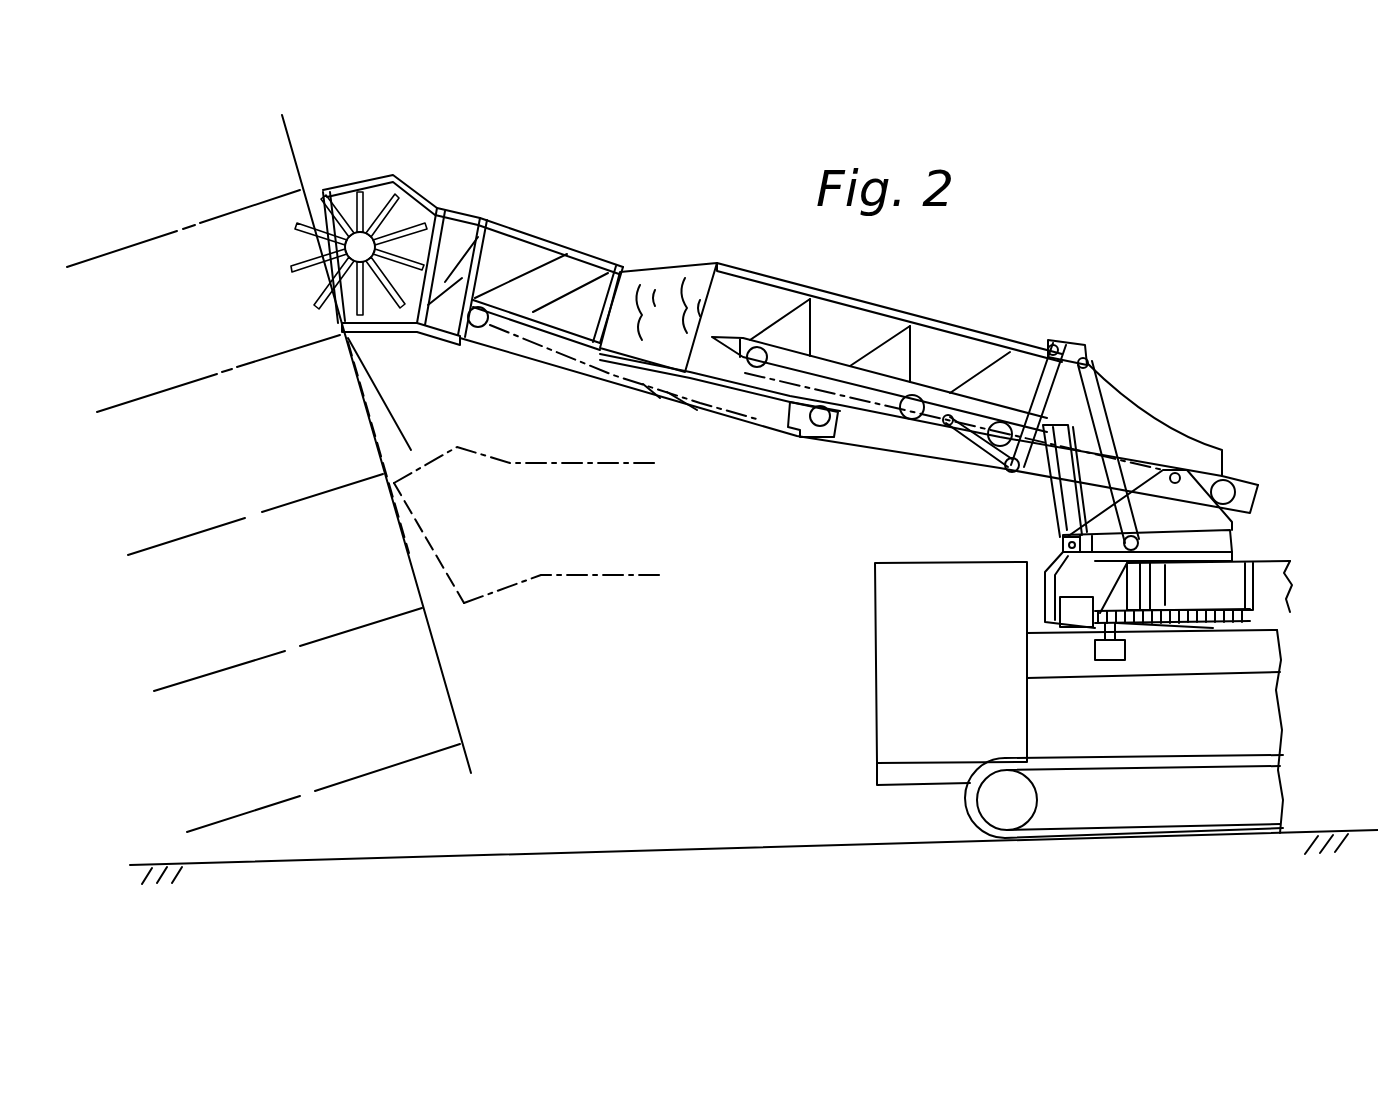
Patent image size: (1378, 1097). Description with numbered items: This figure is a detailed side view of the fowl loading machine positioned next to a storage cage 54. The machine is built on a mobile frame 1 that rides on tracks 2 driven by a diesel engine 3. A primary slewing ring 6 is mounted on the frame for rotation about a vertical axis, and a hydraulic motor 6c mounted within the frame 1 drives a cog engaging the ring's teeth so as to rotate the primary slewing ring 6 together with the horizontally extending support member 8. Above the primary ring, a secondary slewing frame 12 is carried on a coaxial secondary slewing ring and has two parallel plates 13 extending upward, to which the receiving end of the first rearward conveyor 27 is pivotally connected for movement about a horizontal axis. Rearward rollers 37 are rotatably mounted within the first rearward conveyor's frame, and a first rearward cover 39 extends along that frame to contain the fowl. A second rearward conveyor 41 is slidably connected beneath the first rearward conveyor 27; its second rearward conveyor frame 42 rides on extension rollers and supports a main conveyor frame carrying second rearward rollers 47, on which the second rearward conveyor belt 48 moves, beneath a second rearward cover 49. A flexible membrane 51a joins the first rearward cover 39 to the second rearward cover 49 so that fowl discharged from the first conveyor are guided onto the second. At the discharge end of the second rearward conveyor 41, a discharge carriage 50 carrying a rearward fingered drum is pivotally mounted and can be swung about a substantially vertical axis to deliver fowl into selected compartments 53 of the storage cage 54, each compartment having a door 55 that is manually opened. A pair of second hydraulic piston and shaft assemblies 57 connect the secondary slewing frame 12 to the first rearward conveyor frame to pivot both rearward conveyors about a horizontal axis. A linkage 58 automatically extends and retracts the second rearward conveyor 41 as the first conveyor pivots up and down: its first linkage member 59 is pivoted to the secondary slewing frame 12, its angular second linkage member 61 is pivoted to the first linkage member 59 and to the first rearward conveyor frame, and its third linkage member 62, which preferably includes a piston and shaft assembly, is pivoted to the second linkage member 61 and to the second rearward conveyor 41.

The mobile frame 1 is at (1081, 654).
The tracks 2 is at (965, 812).
The diesel engine 3 is at (875, 690).
The primary slewing ring 6 is at (1250, 617).
The hydraulic motor 6c is at (1125, 650).
The support member 8 is at (1287, 560).
The secondary slewing frame 12 is at (1232, 540).
The plates 13 is at (1232, 523).
The first rearward conveyor 27 is at (937, 354).
The rearward rollers 37 is at (740, 350).
The first rearward cover 39 is at (808, 330).
The second rearward conveyor 41 is at (790, 404).
The second rearward conveyor frame 42 is at (797, 434).
The second rearward rollers 47 is at (490, 322).
The second rearward conveyor belt 48 is at (642, 380).
The second rearward cover 49 is at (548, 270).
The discharge carriage 50 is at (362, 182).
The flexible membrane 51a is at (640, 268).
The compartments 53 is at (272, 212).
The storage cage 54 is at (462, 716).
The door 55 is at (402, 425).
The second hydraulic piston and shaft assemblies 57 is at (1043, 522).
The linkage 58 is at (1065, 345).
The first linkage member 59 is at (1105, 408).
The second linkage member 61 is at (1013, 355).
The third linkage member 62 is at (1004, 472).